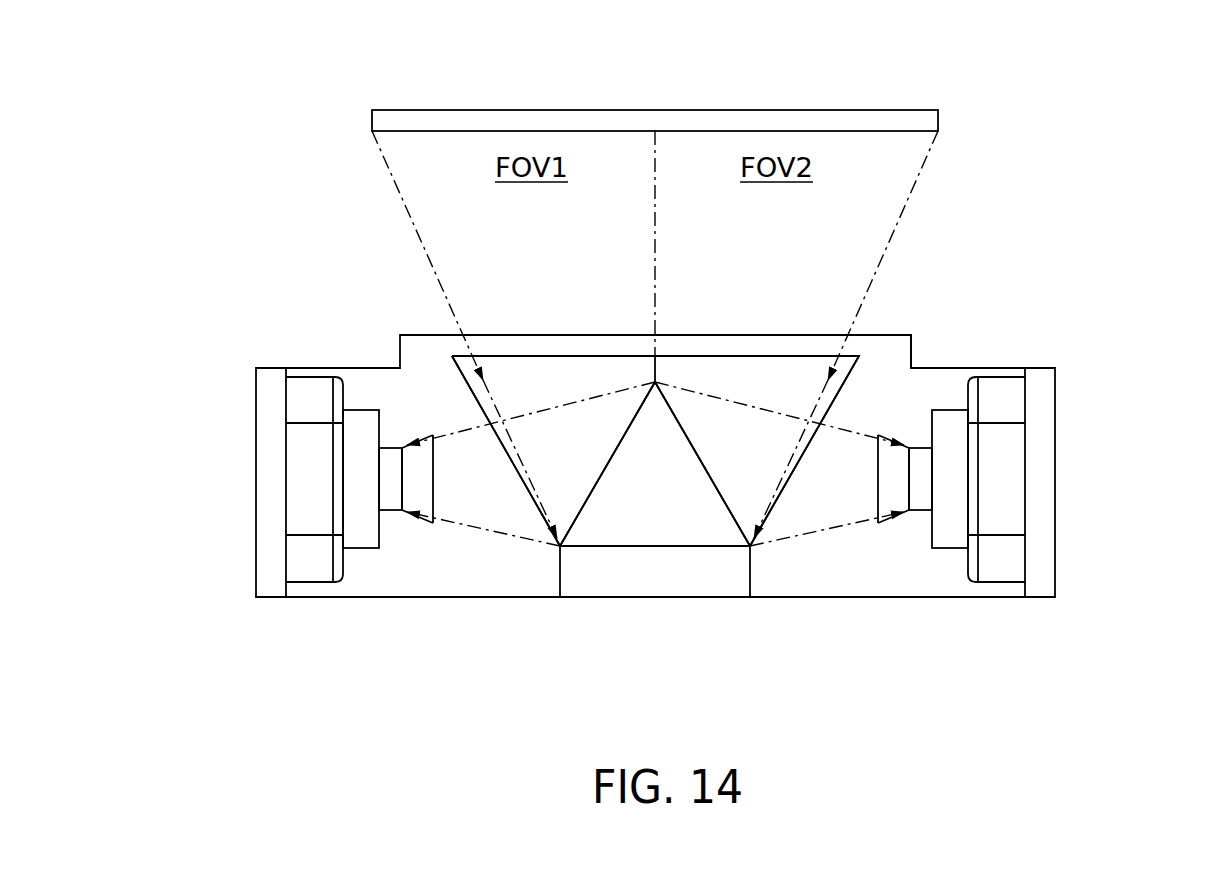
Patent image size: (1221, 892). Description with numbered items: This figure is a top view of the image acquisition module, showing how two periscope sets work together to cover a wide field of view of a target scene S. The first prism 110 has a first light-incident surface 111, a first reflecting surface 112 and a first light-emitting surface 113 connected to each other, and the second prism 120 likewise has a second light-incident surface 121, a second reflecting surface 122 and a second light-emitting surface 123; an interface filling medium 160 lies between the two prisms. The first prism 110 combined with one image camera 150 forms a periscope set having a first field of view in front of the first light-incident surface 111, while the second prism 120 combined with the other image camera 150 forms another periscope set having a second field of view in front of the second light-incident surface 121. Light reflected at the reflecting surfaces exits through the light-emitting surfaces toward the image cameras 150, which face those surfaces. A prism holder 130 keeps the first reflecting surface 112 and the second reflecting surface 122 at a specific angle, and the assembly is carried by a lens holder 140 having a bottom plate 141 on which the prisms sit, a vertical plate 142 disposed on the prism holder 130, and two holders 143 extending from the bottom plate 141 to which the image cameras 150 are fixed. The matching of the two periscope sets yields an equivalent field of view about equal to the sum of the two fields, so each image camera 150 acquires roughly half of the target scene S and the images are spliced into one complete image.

The target scene S is at (940, 117).
The first prism 110 is at (592, 405).
The first light-incident surface 111 is at (542, 354).
The first reflecting surface 112 is at (606, 484).
The first light-emitting surface 113 is at (545, 522).
The second prism 120 is at (720, 405).
The second light-incident surface 121 is at (767, 355).
The second reflecting surface 122 is at (705, 484).
The second light-emitting surface 123 is at (767, 522).
The prism holder 130 is at (663, 520).
The lens holder 140 is at (404, 333).
The bottom plate 141 is at (933, 387).
The vertical plate 142 is at (638, 573).
The holder 143 is at (268, 497).
The image camera 150 is at (310, 558).
The interface filling medium 160 is at (659, 378).